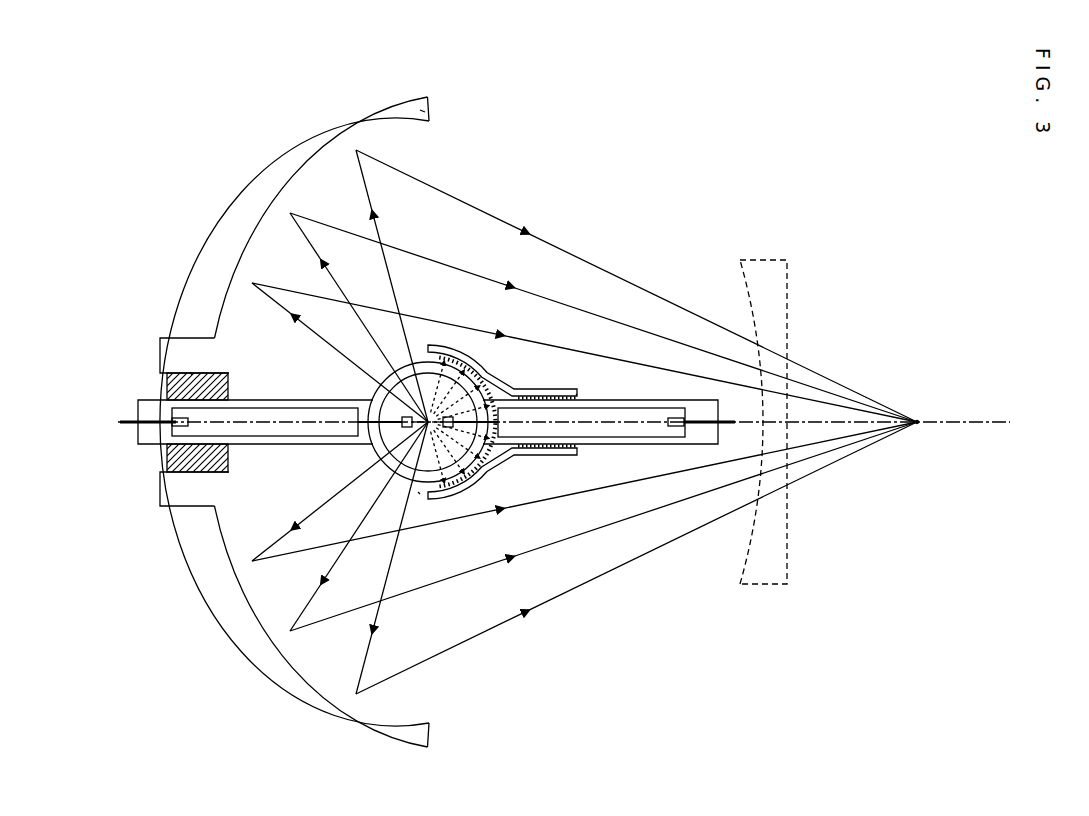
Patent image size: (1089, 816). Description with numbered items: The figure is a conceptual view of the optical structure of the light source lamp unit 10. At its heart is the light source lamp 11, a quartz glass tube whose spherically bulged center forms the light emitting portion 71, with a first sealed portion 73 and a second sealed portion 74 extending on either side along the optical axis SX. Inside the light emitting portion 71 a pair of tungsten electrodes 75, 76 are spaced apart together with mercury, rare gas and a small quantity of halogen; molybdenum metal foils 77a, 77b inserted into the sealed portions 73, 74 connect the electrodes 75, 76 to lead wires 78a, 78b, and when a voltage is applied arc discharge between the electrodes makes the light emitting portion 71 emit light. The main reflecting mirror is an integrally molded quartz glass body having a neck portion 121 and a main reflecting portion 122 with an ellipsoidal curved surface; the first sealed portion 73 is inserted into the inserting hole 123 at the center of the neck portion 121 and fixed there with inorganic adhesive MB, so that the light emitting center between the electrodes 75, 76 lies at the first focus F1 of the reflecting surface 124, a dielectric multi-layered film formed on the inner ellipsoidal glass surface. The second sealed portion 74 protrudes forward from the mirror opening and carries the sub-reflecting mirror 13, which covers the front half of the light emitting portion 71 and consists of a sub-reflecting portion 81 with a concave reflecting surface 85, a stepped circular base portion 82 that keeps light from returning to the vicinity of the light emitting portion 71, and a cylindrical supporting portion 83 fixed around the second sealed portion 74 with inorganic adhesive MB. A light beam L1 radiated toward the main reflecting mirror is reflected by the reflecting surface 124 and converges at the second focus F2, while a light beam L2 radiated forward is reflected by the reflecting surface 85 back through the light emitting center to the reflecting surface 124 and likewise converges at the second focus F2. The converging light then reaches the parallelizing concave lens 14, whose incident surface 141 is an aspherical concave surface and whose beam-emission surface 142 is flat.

The light source device 10 is at (866, 77).
The light source lamp 11 is at (422, 389).
The sub-reflecting mirror 13 is at (422, 389).
The parallelizing concave lens 14 is at (768, 403).
The light emitting portion 71 is at (372, 396).
The first sealed portion 73 is at (240, 447).
The second sealed portion 74 is at (662, 446).
The tungsten electrode 75 is at (576, 394).
The tungsten electrode 76 is at (345, 437).
The metal foil 77a is at (265, 417).
The metal foil 77b is at (628, 430).
The lead wire 78a is at (122, 419).
The lead wire 78b is at (698, 405).
The sub-reflecting portion 81 is at (475, 368).
The base portion 82 is at (513, 387).
The supporting portion 83 is at (548, 451).
The reflecting surface 85 is at (418, 492).
The neck portion 121 is at (190, 490).
The main reflecting portion 122 is at (318, 166).
The inserting hole 123 is at (163, 460).
The reflecting surface 124 is at (397, 130).
The incident surface 141 is at (740, 585).
The beam-emission surface 142 is at (788, 585).
The light beam L1 is at (303, 320).
The light beam L2 is at (481, 363).
The inorganic adhesive MB is at (190, 372).
The first focus F1 is at (426, 424).
The second focus F2 is at (917, 420).
The optical axis SX is at (967, 424).